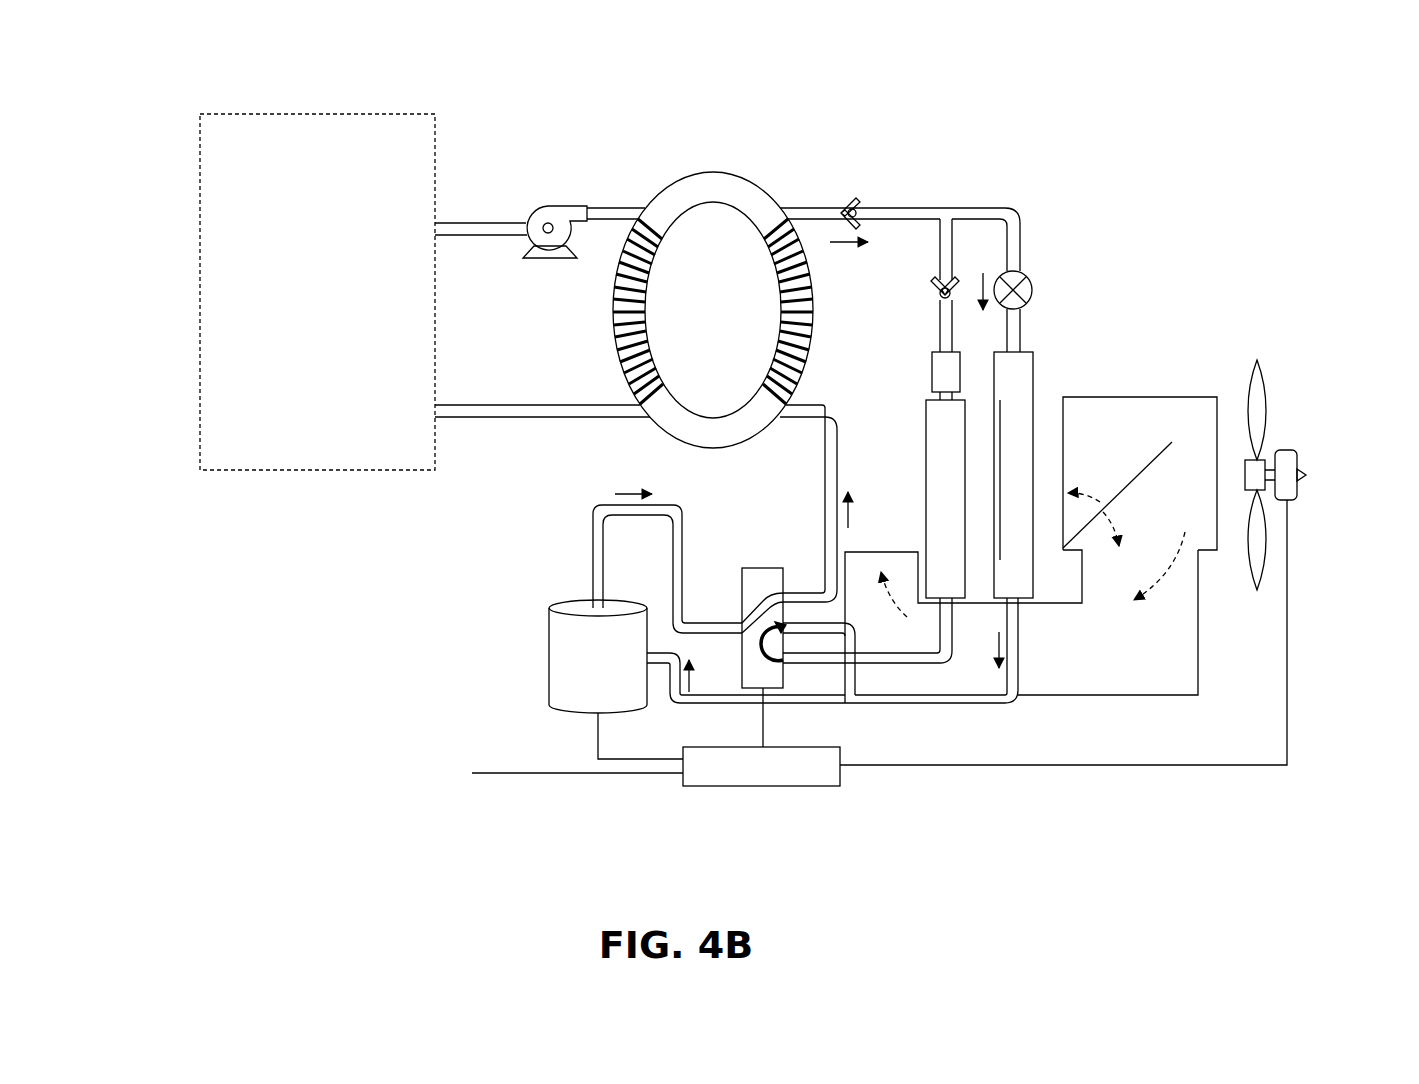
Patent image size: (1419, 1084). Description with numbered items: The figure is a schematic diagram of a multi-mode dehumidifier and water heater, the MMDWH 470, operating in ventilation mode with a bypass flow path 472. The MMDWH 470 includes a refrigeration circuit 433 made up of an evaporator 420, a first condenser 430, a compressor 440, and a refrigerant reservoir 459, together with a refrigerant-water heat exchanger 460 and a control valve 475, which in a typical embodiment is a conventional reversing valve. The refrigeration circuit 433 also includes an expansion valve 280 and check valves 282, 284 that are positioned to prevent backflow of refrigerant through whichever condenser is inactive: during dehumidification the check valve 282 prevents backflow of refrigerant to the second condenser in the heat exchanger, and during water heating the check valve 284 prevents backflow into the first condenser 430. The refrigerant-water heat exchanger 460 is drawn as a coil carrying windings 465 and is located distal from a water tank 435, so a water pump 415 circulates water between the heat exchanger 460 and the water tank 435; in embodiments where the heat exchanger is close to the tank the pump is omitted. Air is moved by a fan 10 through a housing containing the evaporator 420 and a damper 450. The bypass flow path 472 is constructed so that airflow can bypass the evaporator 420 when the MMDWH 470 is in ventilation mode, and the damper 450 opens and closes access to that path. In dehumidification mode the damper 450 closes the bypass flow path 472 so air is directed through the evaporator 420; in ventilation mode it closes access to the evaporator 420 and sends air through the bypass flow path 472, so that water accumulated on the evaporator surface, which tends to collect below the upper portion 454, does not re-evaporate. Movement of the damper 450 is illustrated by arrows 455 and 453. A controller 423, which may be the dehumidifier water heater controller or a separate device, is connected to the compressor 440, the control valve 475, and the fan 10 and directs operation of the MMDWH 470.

The MMDWH 470 is at (968, 76).
The water tank 435 is at (357, 112).
The water pump 415 is at (550, 204).
The refrigerant-water heat exchanger 460 is at (672, 184).
The coil windings 465 is at (760, 195).
The check valve 282 is at (852, 204).
The check valve 284 is at (965, 285).
The expansion valve 280 is at (1033, 292).
The refrigerant reservoir 459 is at (932, 372).
The first condenser 430 is at (926, 447).
The evaporator 420 is at (1033, 360).
The upper portion 454 is at (1017, 395).
The damper 450 is at (1153, 458).
The arrow 455 is at (1092, 502).
The arrow 453 is at (1100, 548).
The fan 10 is at (1290, 450).
The control valve 475 is at (755, 568).
The compressor 440 is at (578, 678).
The refrigeration circuit 433 is at (933, 708).
The bypass flow path 472 is at (1088, 700).
The controller 423 is at (718, 787).